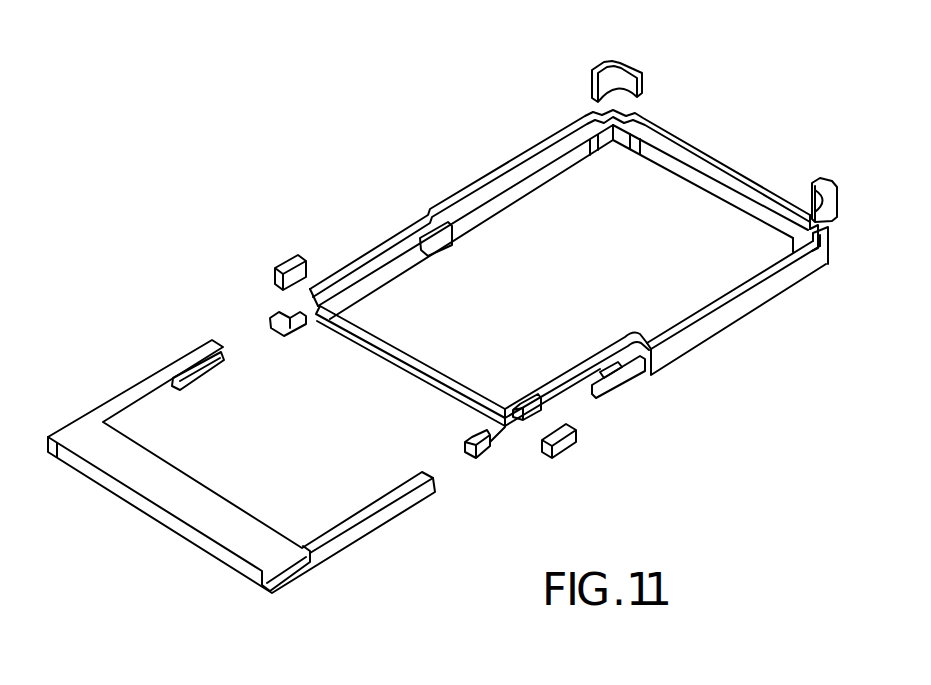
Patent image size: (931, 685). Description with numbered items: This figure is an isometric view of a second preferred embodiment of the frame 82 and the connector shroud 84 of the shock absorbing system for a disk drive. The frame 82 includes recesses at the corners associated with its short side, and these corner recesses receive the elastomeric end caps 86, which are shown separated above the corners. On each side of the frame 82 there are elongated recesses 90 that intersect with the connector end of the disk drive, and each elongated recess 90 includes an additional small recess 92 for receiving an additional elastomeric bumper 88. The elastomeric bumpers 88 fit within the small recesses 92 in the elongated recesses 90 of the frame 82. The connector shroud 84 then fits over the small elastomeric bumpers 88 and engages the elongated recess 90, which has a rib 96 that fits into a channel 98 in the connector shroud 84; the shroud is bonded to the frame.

The frame 82 is at (735, 310).
The connector shroud 84 is at (128, 389).
The elastomeric end caps 86 is at (623, 61).
The elastomeric bumper 88 is at (287, 257).
The elongated recesses 90 is at (423, 248).
The small recess 92 is at (518, 420).
The rib 96 is at (618, 378).
The channel 98 is at (200, 370).